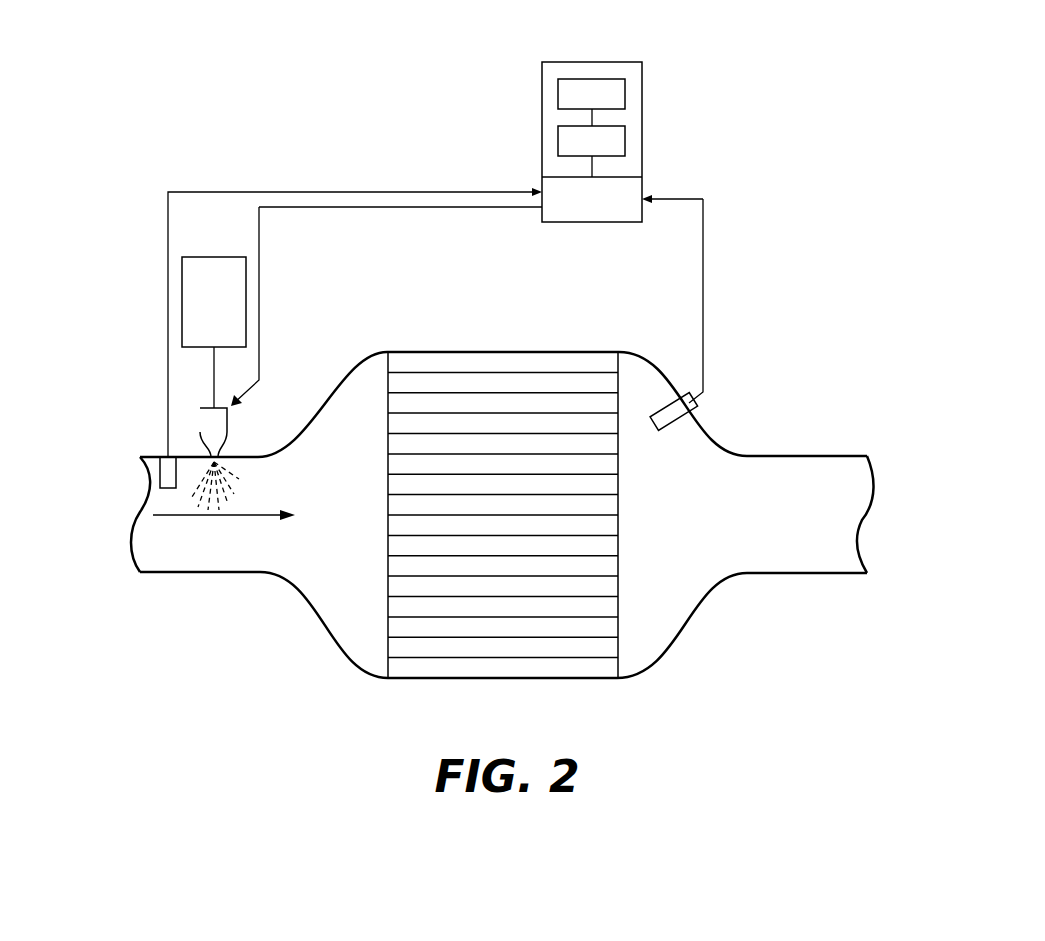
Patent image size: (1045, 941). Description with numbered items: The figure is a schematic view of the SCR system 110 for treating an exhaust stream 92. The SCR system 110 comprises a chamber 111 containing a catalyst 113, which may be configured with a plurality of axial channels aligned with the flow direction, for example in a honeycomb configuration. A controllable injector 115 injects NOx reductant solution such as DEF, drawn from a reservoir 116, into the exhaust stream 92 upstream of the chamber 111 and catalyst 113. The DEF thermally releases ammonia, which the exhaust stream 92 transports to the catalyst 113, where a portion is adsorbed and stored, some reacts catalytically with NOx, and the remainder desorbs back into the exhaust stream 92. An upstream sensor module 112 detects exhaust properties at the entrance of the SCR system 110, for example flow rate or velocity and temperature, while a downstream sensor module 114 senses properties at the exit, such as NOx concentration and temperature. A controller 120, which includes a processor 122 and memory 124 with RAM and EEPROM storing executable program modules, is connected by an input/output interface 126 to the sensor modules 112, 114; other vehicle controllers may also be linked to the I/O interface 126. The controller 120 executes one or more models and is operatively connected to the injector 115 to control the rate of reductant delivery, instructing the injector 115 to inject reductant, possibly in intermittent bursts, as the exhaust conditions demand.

The exhaust stream 92 is at (200, 517).
The SCR system 110 is at (424, 698).
The chamber 111 is at (361, 357).
The upstream sensor module 112 is at (160, 476).
The catalyst 113 is at (567, 668).
The downstream sensor module 114 is at (690, 414).
The injector 115 is at (229, 420).
The reservoir 116 is at (214, 257).
The controller 120 is at (650, 110).
The processor 122 is at (558, 88).
The memory 124 is at (558, 134).
The input/output (I/O) interface 126 is at (642, 187).